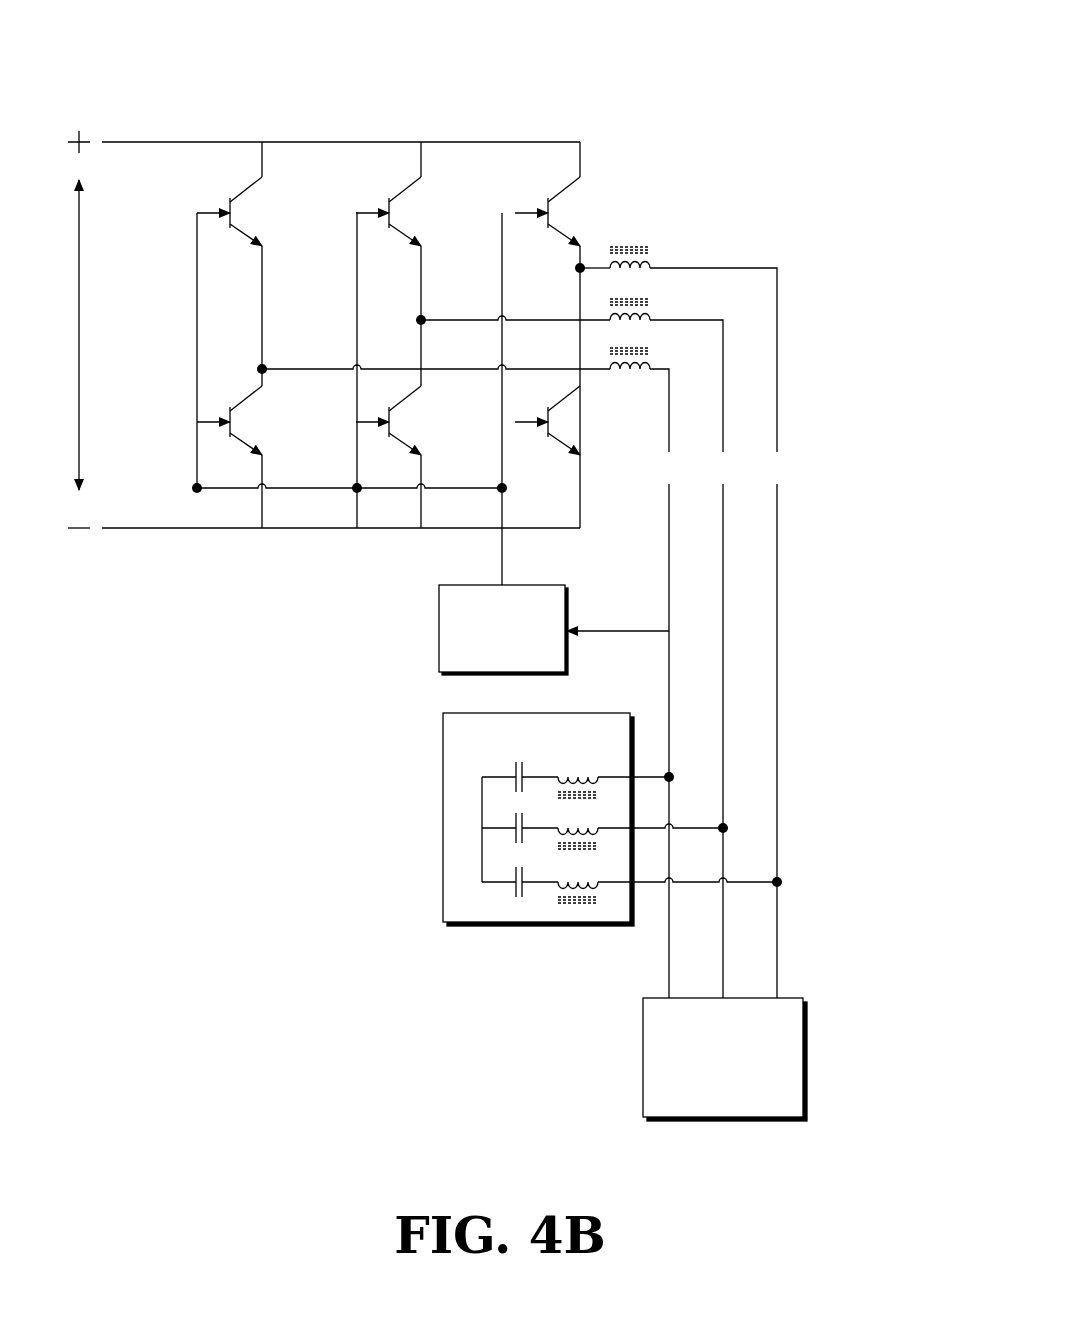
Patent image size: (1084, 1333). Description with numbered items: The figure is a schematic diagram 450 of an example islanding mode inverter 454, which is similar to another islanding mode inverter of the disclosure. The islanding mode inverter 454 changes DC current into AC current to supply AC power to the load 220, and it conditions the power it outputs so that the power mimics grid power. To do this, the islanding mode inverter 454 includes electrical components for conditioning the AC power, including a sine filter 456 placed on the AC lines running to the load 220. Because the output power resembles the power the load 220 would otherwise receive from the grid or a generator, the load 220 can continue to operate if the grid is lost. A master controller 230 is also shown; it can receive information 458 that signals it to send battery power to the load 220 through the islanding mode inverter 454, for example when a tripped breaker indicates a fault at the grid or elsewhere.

The schematic diagram 450 is at (884, 107).
The islanding mode inverter 454 is at (636, 145).
The master controller 230 is at (439, 628).
The information 458 is at (627, 631).
The sine filter 456 is at (475, 921).
The load 220 is at (748, 1095).